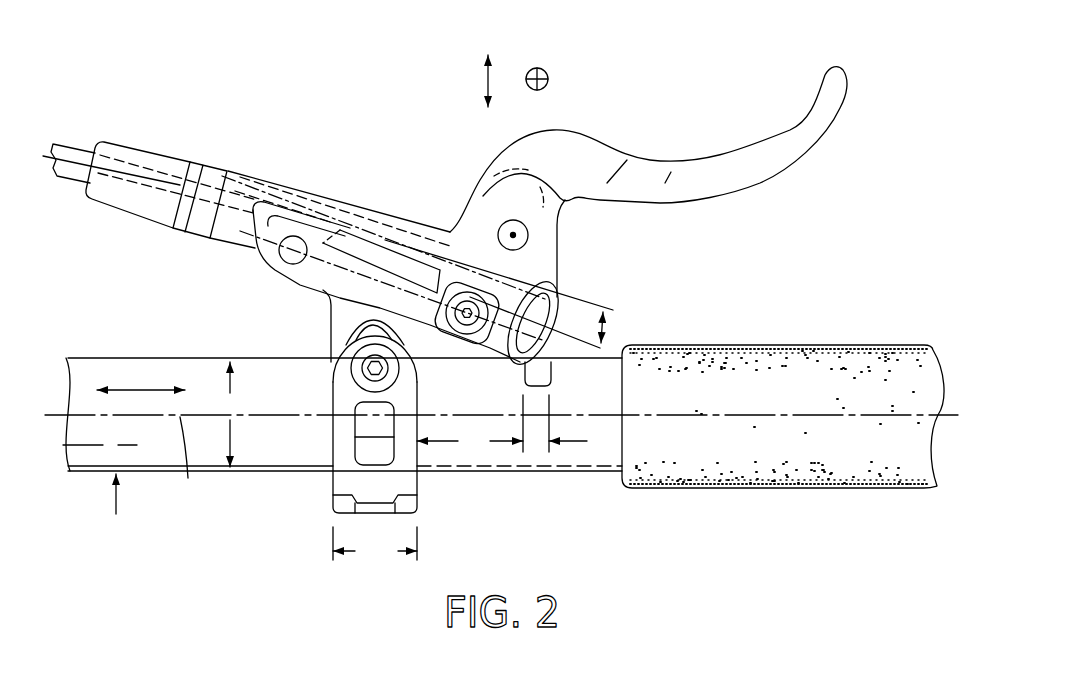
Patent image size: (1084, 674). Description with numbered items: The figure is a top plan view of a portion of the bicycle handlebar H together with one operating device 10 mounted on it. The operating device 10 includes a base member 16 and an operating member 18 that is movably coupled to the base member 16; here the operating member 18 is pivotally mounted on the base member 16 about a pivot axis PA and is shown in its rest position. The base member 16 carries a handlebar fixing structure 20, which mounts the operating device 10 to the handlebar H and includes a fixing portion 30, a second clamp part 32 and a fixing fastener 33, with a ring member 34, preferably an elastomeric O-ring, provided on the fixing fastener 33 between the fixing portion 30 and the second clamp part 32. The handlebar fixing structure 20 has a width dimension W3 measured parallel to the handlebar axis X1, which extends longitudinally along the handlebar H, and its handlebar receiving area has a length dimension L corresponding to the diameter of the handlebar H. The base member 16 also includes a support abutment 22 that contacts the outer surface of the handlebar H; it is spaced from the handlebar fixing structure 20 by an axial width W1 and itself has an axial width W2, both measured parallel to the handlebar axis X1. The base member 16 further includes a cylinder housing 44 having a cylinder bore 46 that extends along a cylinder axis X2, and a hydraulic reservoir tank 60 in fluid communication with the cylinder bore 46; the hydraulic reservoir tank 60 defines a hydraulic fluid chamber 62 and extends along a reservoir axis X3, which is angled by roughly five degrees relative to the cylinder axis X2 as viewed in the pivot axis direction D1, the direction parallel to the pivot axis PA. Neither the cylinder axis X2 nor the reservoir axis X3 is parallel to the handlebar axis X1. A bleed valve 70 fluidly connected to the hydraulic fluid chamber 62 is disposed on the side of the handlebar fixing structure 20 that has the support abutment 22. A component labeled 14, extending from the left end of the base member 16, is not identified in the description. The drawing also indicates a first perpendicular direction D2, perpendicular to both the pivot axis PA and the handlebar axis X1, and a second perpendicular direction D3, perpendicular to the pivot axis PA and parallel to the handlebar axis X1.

The operating device 10 is at (178, 40).
The cable / cable adjuster 14 is at (77, 144).
The base member 16 is at (262, 171).
The operating member 18 is at (738, 144).
The handlebar fixing structure 20 is at (330, 487).
The support abutment 22 is at (515, 374).
The fixing portion 30 is at (331, 334).
The second clamp part 32 is at (418, 486).
The fixing fastener 33 is at (365, 378).
The ring member 34 is at (351, 363).
The cylinder housing 44 is at (347, 207).
The cylinder bore 46 is at (307, 200).
The hydraulic reservoir tank 60 is at (390, 240).
The hydraulic fluid chamber 62 is at (332, 310).
The bleed valve 70 is at (458, 345).
The pivot axis PA is at (518, 236).
The handlebar axis X1 is at (187, 464).
The cylinder axis X2 is at (580, 300).
The reservoir axis X3 is at (582, 346).
The pivot axis direction D1 is at (548, 75).
The first perpendicular direction D2 is at (488, 82).
The second perpendicular direction D3 is at (143, 388).
The length dimension L is at (232, 414).
The handlebar H is at (115, 509).
The axial width W1 is at (483, 424).
The axial width of support abutment W2 is at (538, 446).
The width dimension of handlebar fixing structure W3 is at (375, 545).